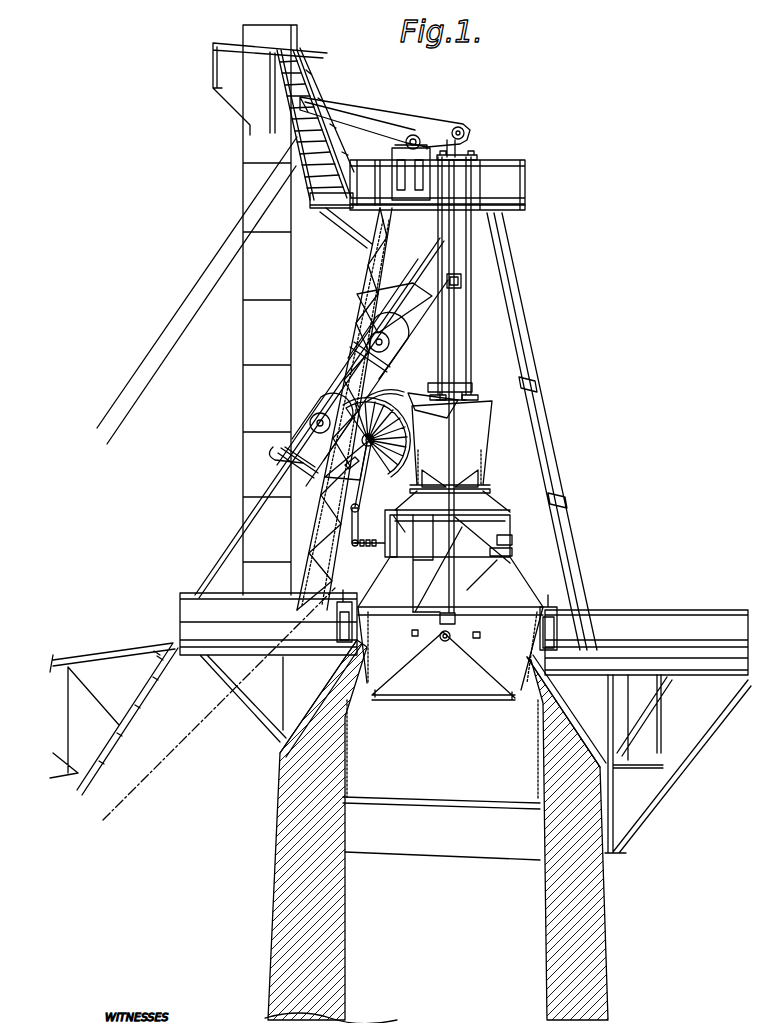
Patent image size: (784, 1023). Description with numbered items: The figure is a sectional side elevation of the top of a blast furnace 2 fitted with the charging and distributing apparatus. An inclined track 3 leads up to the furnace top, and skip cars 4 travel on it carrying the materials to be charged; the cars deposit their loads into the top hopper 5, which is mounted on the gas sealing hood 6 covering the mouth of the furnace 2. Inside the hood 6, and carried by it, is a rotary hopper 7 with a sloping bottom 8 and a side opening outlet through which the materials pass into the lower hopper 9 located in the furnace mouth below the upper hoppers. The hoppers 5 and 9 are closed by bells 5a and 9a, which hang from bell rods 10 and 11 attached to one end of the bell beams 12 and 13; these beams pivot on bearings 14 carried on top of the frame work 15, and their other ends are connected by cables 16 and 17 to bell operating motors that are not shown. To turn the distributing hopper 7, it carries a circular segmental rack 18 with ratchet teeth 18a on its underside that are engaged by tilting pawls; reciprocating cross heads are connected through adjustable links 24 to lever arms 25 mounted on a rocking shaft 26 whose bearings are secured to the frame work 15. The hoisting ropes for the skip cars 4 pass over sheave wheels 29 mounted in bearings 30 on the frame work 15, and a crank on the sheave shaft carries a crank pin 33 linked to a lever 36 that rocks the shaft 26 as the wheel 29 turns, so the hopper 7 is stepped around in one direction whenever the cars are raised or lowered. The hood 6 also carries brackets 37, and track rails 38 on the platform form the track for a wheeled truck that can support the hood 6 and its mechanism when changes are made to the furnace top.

The blast furnace 2 is at (392, 824).
The inclined track 3 is at (127, 712).
The skip car 4 is at (372, 310).
The top hopper 5 is at (480, 423).
The closing bell 5a is at (468, 492).
The gas sealing hood 6 is at (498, 512).
The rotary hopper 7 is at (424, 563).
The sloping bottom 8 is at (455, 569).
The lower hopper 9 is at (527, 663).
The closing bell 9a is at (443, 665).
The bell rod 10 is at (452, 413).
The bell rod 11 is at (455, 333).
The bell beam 12 is at (370, 127).
The bell beam 13 is at (396, 124).
The bearing 14 is at (446, 130).
The frame work 15 is at (507, 263).
The cable 16 is at (145, 377).
The cable 17 is at (138, 370).
The circular segmental rack 18 is at (512, 540).
The ratchet teeth 18a is at (510, 557).
The adjustable link 24 is at (382, 547).
The lever arm 25 is at (357, 522).
The rocking shaft 26 is at (359, 510).
The sheave wheel 29 is at (383, 480).
The bearing 30 is at (325, 503).
The crank pin 33 is at (382, 416).
The lever 36 is at (370, 495).
The bracket 37 is at (530, 603).
The track rail 38 is at (347, 660).